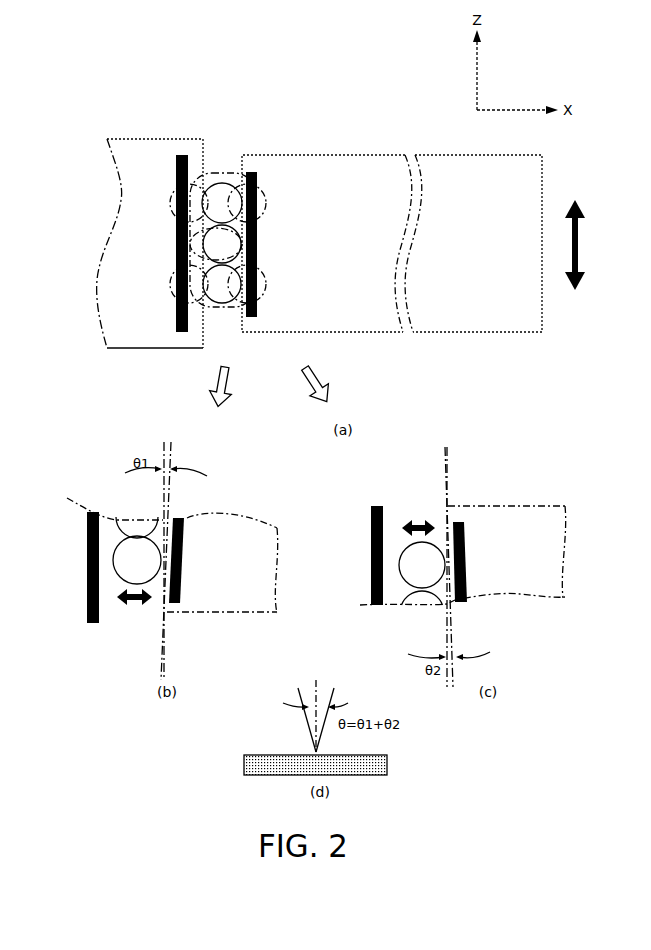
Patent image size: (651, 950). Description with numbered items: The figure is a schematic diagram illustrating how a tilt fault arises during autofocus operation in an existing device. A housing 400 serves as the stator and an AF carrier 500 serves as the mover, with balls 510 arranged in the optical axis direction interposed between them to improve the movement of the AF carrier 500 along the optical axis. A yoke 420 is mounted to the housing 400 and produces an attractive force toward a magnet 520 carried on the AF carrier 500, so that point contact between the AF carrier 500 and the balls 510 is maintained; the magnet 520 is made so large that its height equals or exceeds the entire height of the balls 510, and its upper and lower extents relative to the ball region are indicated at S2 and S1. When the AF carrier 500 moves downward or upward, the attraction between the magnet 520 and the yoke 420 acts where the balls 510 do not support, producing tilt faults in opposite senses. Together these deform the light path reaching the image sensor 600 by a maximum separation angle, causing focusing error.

The housing 400 is at (136, 198).
The yoke 420 is at (176, 238).
The AF carrier 500 is at (316, 162).
The balls 510 is at (122, 560).
The magnet 520 is at (257, 240).
The image sensor 600 is at (387, 762).
The first surface S1 is at (243, 307).
The second surface S2 is at (222, 173).